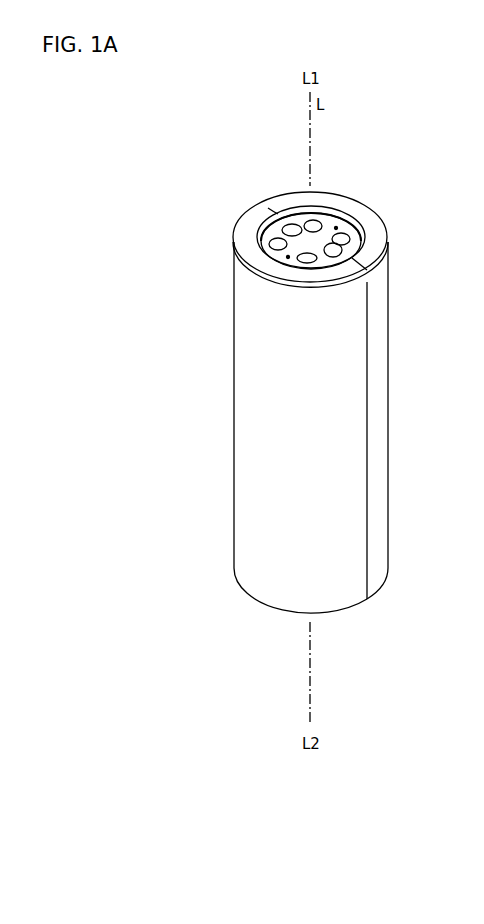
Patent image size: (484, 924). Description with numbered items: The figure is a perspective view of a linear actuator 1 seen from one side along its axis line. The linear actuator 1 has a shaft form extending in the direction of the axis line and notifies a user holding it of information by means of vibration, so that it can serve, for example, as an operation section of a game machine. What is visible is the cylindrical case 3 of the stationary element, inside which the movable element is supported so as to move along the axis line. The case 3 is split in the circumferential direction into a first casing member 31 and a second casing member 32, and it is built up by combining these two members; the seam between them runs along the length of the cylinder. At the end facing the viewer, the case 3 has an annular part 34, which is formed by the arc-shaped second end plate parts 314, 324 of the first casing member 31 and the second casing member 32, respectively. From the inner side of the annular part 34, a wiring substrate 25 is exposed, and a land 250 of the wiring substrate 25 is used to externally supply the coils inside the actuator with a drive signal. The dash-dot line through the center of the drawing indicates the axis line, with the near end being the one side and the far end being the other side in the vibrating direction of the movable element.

The linear actuator 1 is at (312, 396).
The case 3 is at (302, 463).
The first casing member 31 is at (273, 572).
The second casing member 32 is at (370, 560).
The annular part 34 is at (293, 197).
The second end plate part 314 is at (248, 222).
The second end plate part 324 is at (292, 202).
The wiring substrate 25 is at (337, 217).
The land 250 is at (297, 224).